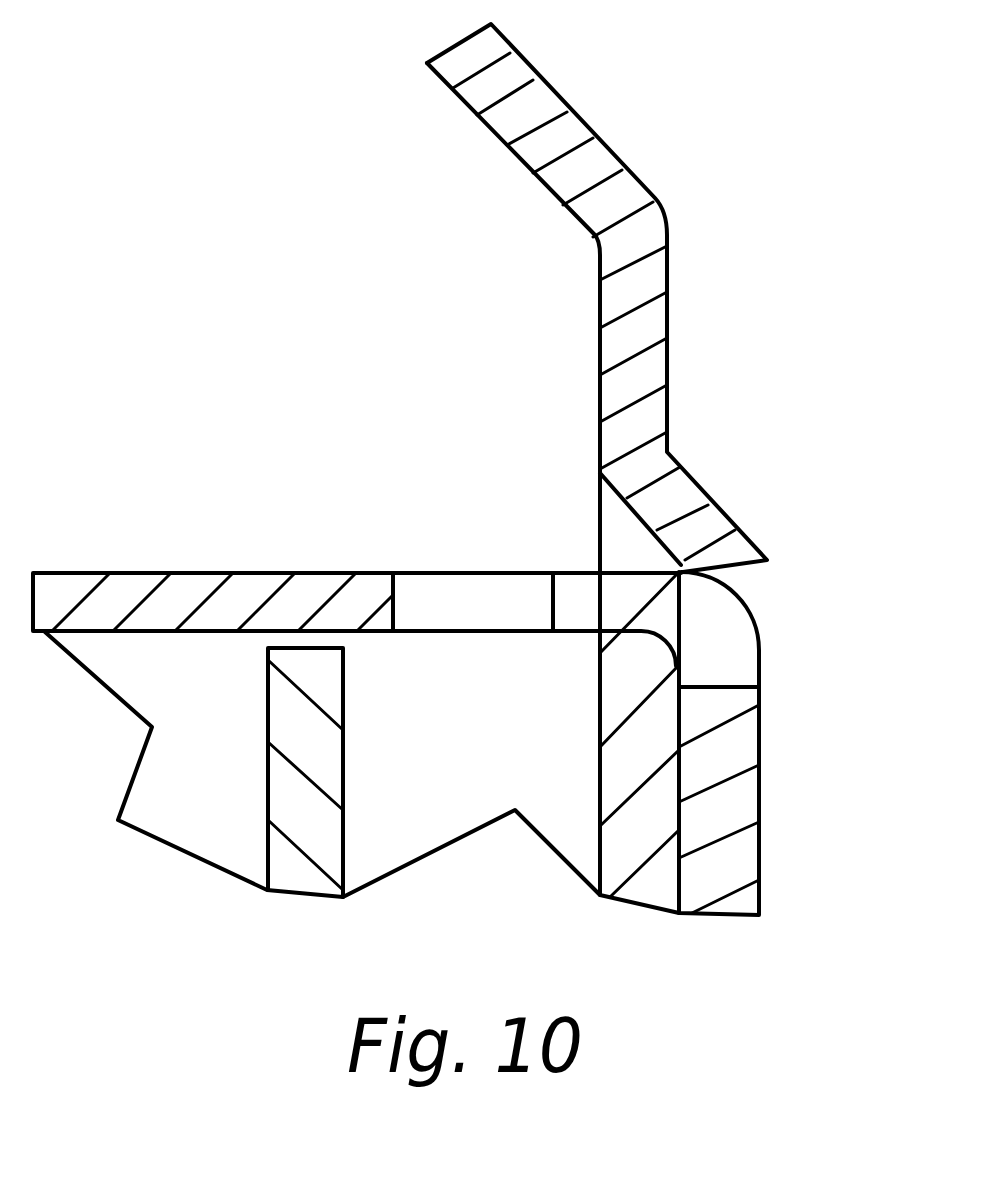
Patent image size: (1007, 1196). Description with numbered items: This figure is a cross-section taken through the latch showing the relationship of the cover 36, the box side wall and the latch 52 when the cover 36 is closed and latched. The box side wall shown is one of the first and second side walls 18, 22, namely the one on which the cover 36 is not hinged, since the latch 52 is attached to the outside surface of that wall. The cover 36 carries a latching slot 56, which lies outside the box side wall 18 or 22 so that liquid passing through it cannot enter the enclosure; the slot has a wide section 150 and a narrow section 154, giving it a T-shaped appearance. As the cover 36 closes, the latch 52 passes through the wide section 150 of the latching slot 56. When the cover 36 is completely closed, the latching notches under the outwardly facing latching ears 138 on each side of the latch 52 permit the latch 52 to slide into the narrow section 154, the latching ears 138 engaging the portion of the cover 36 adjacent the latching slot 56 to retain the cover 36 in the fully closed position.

The first side wall 18 is at (322, 788).
The second side wall 22 is at (197, 796).
The cover 36 is at (202, 571).
The latch 52 is at (653, 827).
The latching slot 56 is at (511, 558).
The latching ear 138 is at (707, 523).
The wide section 150 is at (413, 571).
The narrow section 154 is at (573, 608).